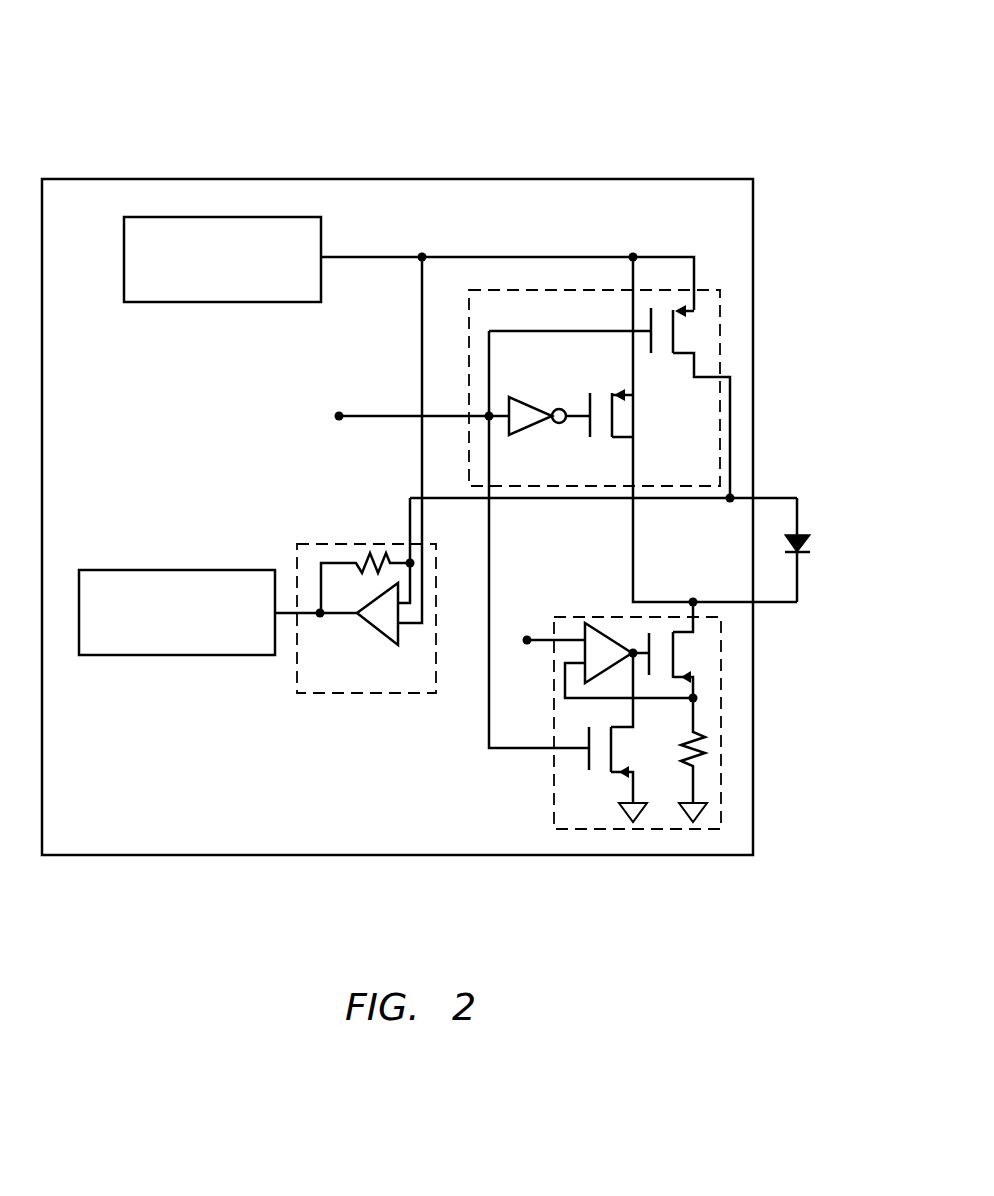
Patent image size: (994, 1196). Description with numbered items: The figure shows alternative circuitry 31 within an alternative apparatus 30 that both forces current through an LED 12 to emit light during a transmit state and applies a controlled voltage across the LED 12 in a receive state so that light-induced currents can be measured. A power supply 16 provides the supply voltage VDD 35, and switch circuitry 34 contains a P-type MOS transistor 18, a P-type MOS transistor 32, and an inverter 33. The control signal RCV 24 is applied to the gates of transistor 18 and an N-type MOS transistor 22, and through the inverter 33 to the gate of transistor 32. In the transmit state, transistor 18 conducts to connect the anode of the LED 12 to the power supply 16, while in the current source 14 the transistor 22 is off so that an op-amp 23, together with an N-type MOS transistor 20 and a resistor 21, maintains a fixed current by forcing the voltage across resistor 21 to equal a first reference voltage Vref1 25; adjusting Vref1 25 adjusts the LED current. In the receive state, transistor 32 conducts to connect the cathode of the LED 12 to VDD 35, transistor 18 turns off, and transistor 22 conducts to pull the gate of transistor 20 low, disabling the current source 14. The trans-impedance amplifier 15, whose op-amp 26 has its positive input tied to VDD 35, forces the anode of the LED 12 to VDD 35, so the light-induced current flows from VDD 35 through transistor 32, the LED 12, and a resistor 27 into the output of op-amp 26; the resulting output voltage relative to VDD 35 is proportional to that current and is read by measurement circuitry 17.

The alternative apparatus 30 is at (706, 74).
The alternative circuitry 31 is at (433, 178).
The power supply 16 is at (190, 302).
The supply voltage (VDD) 35 is at (345, 257).
The switch circuitry 34 is at (720, 298).
The P-type MOS transistor 18 is at (673, 337).
The N-type MOS transistor 22 is at (575, 331).
The inverter 33 is at (522, 398).
The P-type MOS transistor 32 is at (612, 418).
The RCV 24 is at (388, 416).
The LED 12 is at (810, 540).
The trans-impedance amplifier 15 is at (330, 543).
The resistor 27 is at (357, 560).
The measurement circuitry 17 is at (175, 570).
The op-amp 26 is at (377, 632).
The first reference voltage (Vref1) 25 is at (527, 640).
The op-amp 23 is at (598, 630).
The N-type MOS transistor 20 is at (672, 662).
The resistor 21 is at (705, 738).
The current source 14 is at (678, 830).